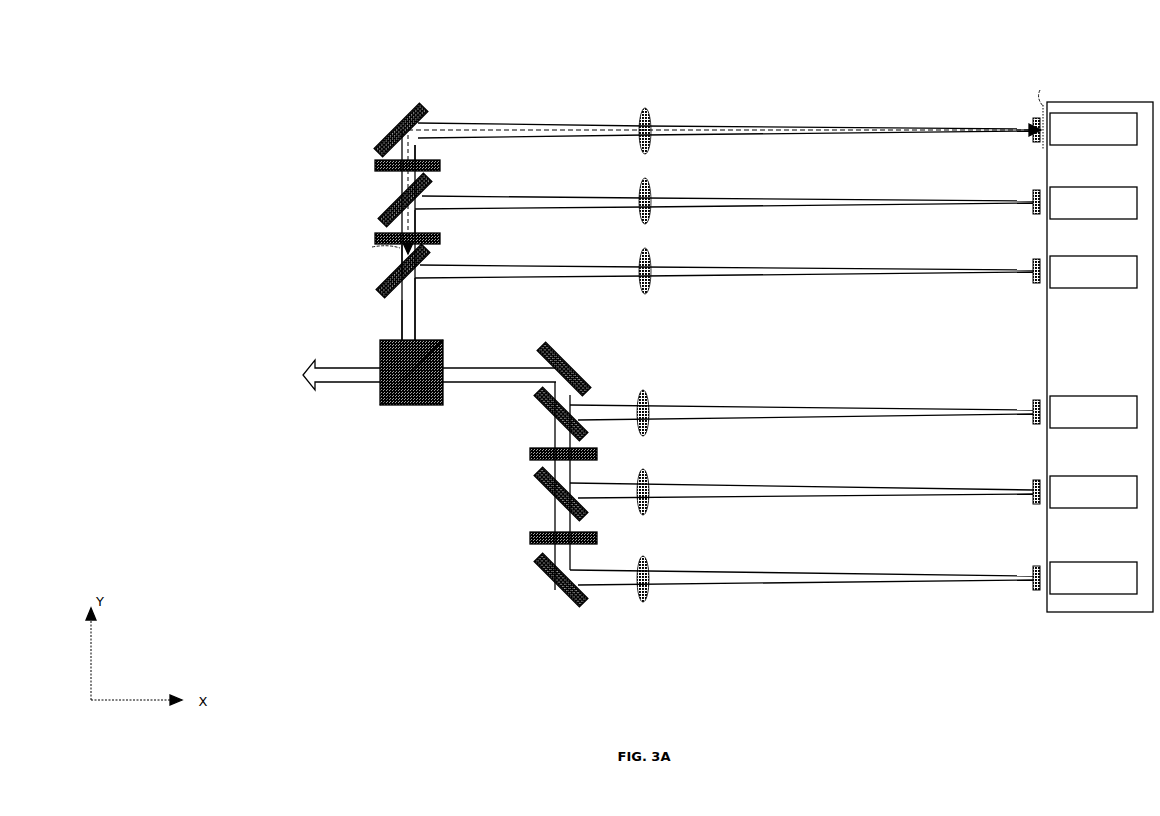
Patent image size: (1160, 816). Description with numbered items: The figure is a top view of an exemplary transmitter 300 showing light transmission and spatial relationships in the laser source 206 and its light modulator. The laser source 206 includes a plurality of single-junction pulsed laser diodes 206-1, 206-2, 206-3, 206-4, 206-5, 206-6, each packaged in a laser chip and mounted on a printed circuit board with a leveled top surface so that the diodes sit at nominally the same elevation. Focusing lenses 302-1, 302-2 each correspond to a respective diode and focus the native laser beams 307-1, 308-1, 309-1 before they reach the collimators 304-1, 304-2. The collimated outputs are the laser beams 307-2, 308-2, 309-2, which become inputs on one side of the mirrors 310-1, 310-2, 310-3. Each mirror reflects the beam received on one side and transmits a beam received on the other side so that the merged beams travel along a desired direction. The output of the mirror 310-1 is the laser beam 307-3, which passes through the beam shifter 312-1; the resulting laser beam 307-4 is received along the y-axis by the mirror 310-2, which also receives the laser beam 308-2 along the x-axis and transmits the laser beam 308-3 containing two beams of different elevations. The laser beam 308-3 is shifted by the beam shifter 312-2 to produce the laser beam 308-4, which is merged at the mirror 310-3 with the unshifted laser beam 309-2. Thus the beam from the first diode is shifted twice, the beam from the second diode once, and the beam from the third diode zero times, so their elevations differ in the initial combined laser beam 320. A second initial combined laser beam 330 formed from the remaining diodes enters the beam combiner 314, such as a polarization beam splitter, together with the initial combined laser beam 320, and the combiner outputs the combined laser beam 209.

The transmitter 300 is at (705, 38).
The laser source 206 is at (1081, 347).
The pulsed laser diode 206-1 is at (1076, 136).
The pulsed laser diode 206-2 is at (1076, 210).
The pulsed laser diode 206-3 is at (1076, 279).
The pulsed laser diode 206-4 is at (1076, 419).
The pulsed laser diode 206-5 is at (1076, 499).
The pulsed laser diode 206-6 is at (1076, 585).
The combined laser beam 209 is at (328, 375).
The focusing lens 302-1 is at (1033, 120).
The focusing lens 302-2 is at (1033, 192).
The collimator 304-1 is at (648, 109).
The collimator 304-2 is at (648, 180).
The native laser beam 307-1 is at (750, 125).
The laser beam 307-2 is at (516, 124).
The laser beam 307-3 is at (418, 152).
The laser beam 307-4 is at (400, 190).
The native laser beam 308-1 is at (752, 197).
The laser beam 308-2 is at (521, 197).
The laser beam 308-3 is at (418, 222).
The laser beam 308-4 is at (400, 263).
The native laser beam 309-1 is at (752, 268).
The laser beam 309-2 is at (521, 268).
The mirror 310-1 is at (422, 111).
The mirror 310-2 is at (428, 186).
The mirror 310-3 is at (428, 258).
The beam shifter 312-1 is at (441, 165).
The beam shifter 312-2 is at (441, 237).
The beam combiner 314 is at (439, 341).
The initial combined laser beam 320 is at (403, 313).
The initial combined laser beam 330 is at (457, 368).